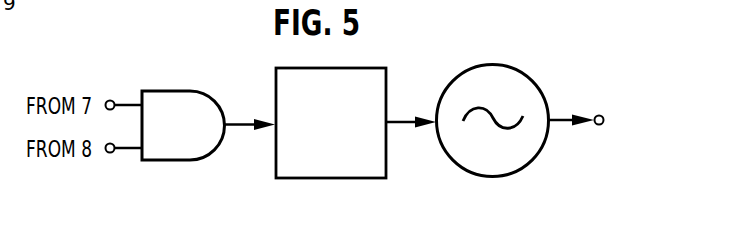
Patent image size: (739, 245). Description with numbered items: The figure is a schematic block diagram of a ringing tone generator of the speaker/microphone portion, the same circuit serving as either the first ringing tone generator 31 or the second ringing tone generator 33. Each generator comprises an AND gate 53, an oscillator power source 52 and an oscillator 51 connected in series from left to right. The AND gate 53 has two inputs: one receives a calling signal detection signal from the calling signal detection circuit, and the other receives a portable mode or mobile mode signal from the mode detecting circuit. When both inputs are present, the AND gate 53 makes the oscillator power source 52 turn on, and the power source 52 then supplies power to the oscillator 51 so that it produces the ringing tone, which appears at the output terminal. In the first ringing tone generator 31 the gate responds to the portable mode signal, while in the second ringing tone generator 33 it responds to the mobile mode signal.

The AND gate 53 is at (183, 152).
The oscillator power source 52 is at (335, 168).
The oscillator 51 is at (495, 170).
The first ringing tone generator 31 is at (602, 71).
The second ringing tone generator 33 is at (579, 62).